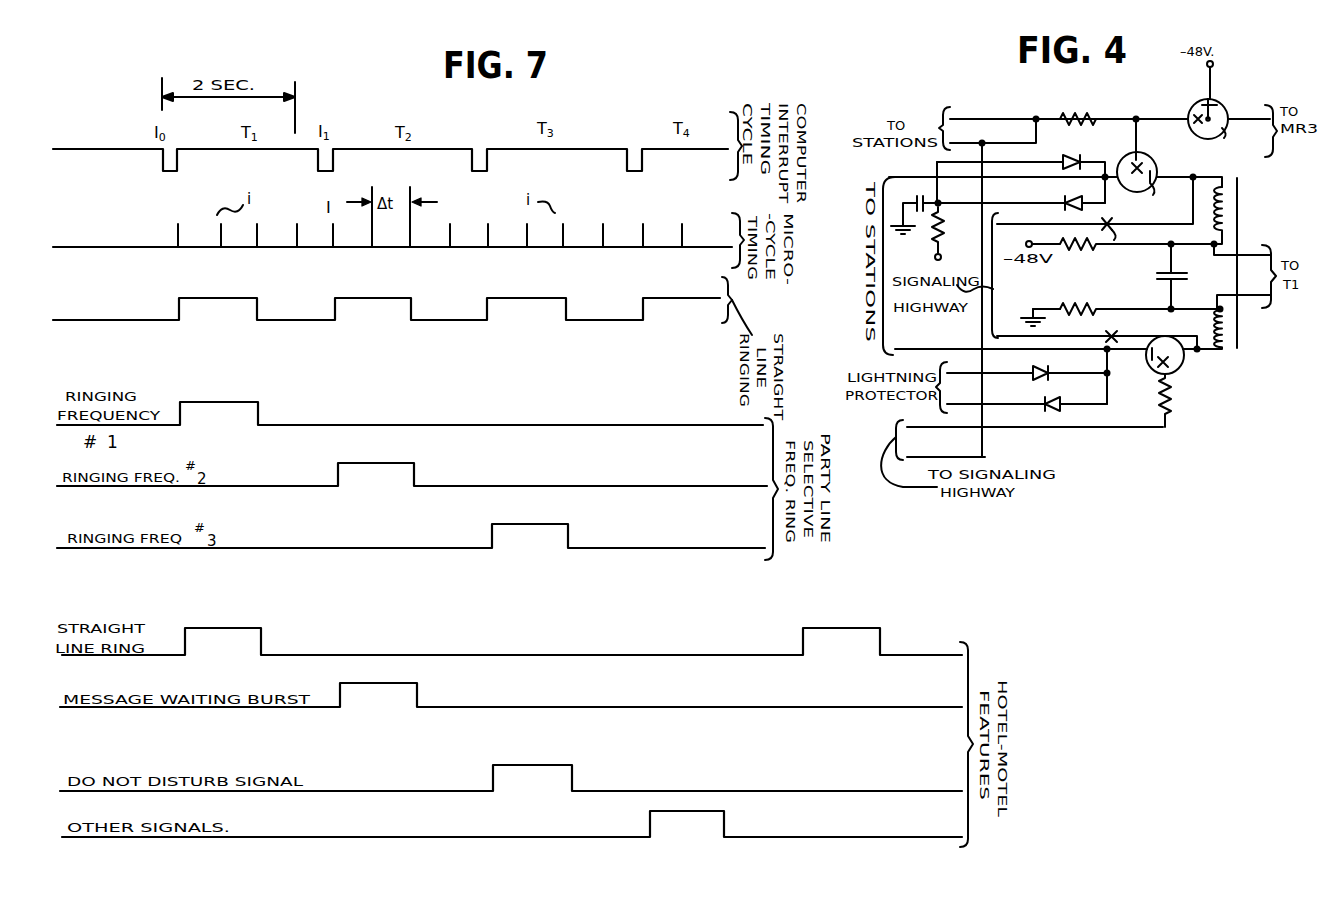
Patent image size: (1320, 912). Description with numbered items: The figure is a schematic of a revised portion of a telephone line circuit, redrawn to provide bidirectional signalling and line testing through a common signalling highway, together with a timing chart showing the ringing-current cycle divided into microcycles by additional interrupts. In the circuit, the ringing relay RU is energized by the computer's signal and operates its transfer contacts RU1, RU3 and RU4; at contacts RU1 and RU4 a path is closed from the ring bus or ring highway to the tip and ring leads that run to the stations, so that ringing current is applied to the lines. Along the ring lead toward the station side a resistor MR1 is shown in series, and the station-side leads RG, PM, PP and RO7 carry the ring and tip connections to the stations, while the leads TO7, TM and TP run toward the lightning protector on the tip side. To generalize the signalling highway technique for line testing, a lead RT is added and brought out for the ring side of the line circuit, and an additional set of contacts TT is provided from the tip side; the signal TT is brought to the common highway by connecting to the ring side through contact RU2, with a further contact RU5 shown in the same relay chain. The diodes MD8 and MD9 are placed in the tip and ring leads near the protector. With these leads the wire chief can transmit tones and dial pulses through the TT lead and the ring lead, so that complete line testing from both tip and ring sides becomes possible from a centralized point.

The resistor MR1 is at (1076, 111).
The ringing relay contacts RU3 is at (1210, 129).
The ringing relay contacts RU4 is at (1139, 167).
The ringing relay contact RU2 is at (1128, 230).
The relay RU5 coil and contact RU5 is at (1120, 331).
The ringing relay contacts RU1 is at (1178, 369).
The diode MD8 is at (1070, 369).
The diode MD9 is at (1076, 399).
The ring ground lead RG is at (993, 133).
The lead PM is at (1023, 175).
The lead PP is at (1014, 186).
The lead RO7 is at (1003, 169).
The tip-side transfer contact lead TT is at (1095, 200).
The ring-side test lead RT is at (1028, 322).
The lead TO7 is at (1048, 344).
The lead TM is at (990, 365).
The lead TP is at (996, 396).